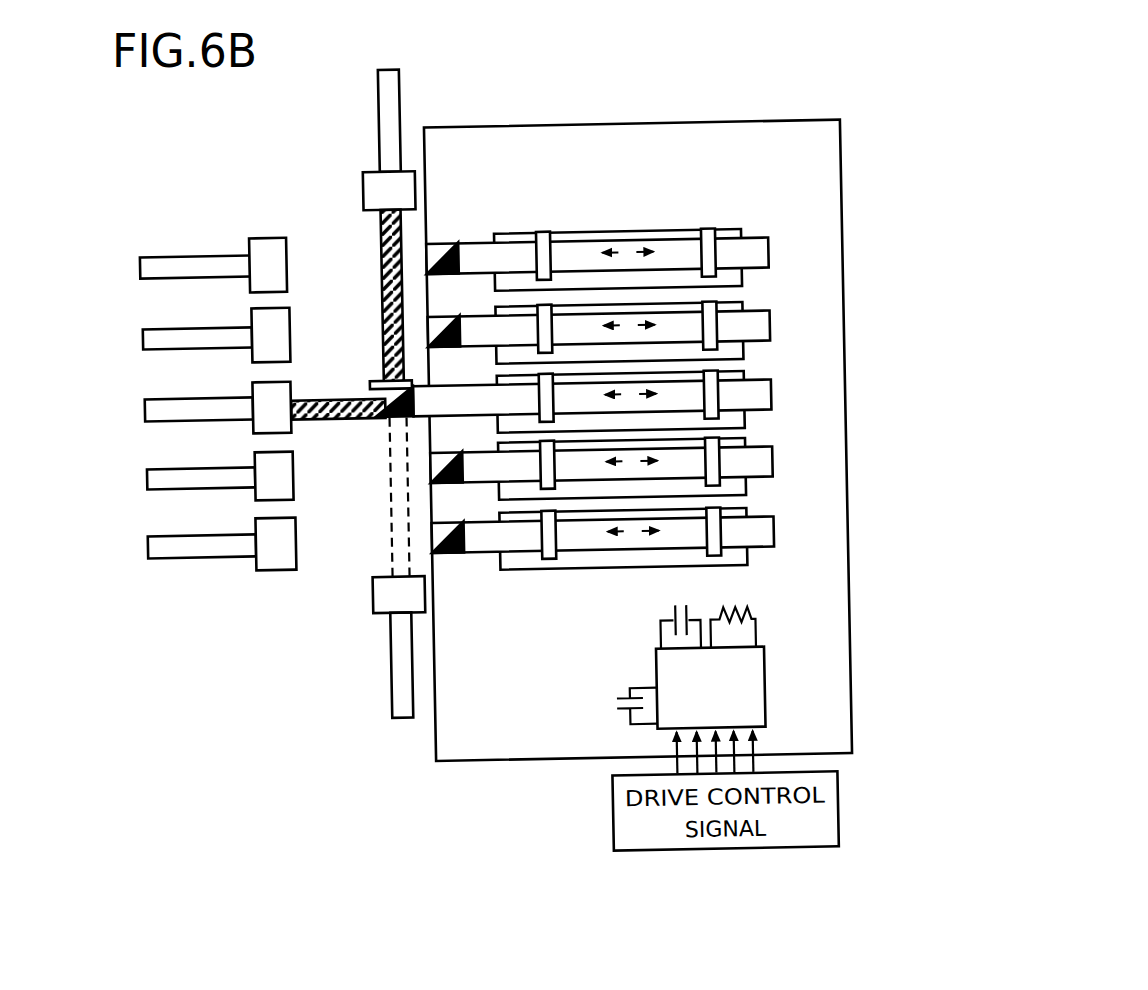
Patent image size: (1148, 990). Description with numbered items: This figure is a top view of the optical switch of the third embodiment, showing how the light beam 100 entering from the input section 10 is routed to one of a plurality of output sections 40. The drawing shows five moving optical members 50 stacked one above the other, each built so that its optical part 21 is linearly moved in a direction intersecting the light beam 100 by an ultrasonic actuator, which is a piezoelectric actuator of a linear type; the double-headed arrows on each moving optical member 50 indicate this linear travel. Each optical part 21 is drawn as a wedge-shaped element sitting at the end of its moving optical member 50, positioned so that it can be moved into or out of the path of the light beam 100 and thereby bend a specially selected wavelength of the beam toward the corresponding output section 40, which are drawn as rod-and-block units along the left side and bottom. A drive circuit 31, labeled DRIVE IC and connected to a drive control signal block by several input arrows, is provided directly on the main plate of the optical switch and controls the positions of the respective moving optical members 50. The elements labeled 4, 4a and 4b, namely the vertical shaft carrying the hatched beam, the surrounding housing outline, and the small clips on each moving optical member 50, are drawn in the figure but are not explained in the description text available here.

The shaft 4 is at (433, 303).
The housing 4a is at (832, 183).
The clip 4b is at (546, 230).
The input section 10 is at (665, 403).
The light beam 100 is at (411, 228).
The optical part 21 is at (464, 246).
The drive circuit 31 is at (763, 693).
The output section 40 is at (215, 235).
The moving optical member 50 is at (781, 250).